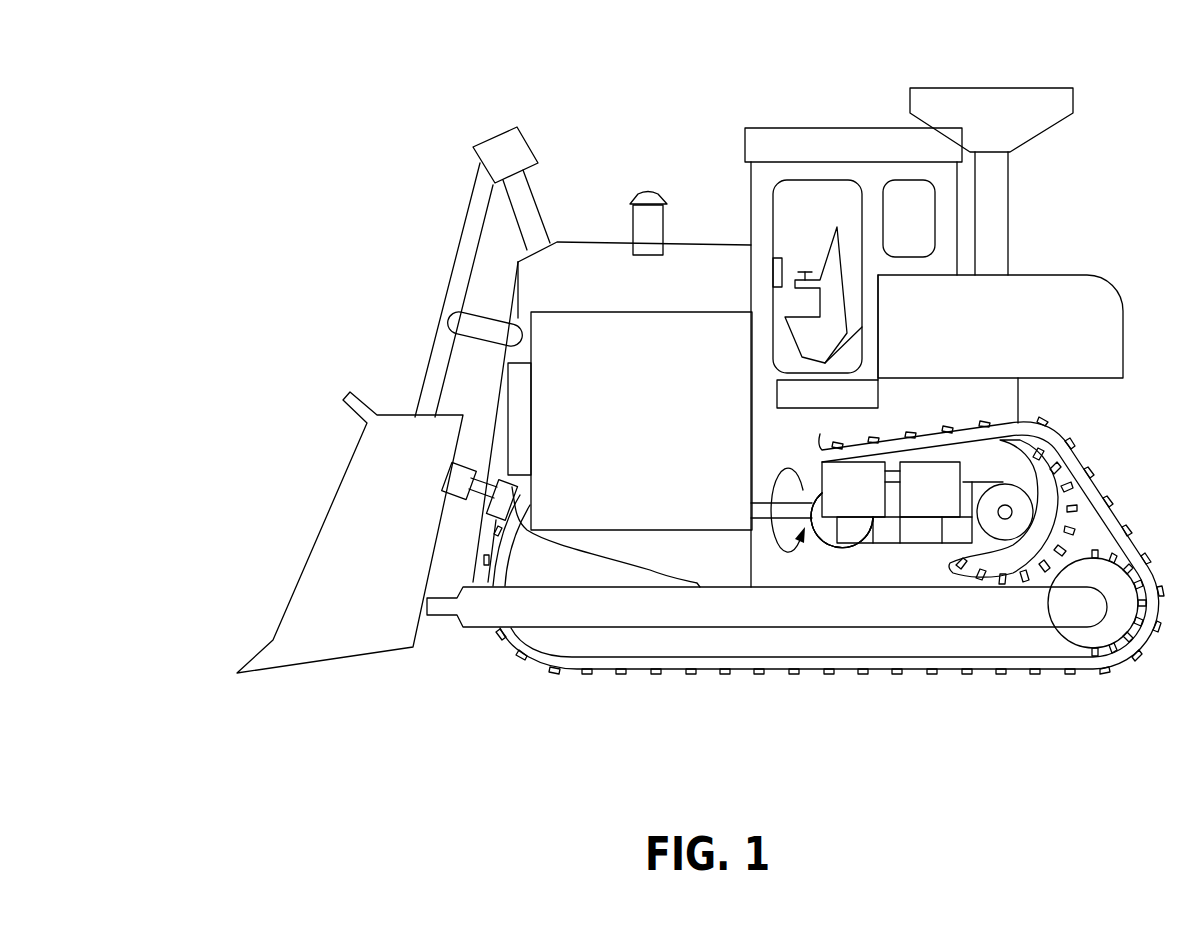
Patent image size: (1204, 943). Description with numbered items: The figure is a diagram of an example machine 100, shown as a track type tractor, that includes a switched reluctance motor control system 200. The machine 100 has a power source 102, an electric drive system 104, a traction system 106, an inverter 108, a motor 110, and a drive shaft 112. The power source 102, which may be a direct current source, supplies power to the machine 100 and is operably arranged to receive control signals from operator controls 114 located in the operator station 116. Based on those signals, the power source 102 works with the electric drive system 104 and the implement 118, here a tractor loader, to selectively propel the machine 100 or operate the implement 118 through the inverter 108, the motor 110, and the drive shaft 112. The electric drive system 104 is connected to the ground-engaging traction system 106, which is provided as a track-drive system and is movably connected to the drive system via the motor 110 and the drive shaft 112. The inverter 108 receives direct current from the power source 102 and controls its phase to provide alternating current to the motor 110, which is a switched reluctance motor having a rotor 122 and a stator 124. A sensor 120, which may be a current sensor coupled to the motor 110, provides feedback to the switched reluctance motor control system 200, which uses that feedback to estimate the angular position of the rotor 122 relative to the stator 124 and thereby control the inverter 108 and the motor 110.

The machine 100 is at (205, 22).
The power source 102 is at (624, 450).
The electric drive system 104 is at (912, 557).
The traction system 106 is at (1124, 530).
The inverter 108 is at (515, 400).
The motor 110 is at (833, 525).
The drive shaft 112 is at (758, 520).
The operator controls 114 is at (768, 255).
The operator station 116 is at (826, 172).
The implement 118 is at (342, 467).
The sensor 120 is at (861, 489).
The rotor 122 is at (873, 654).
The stator 124 is at (872, 667).
The switched reluctance motor control system 200 is at (930, 489).